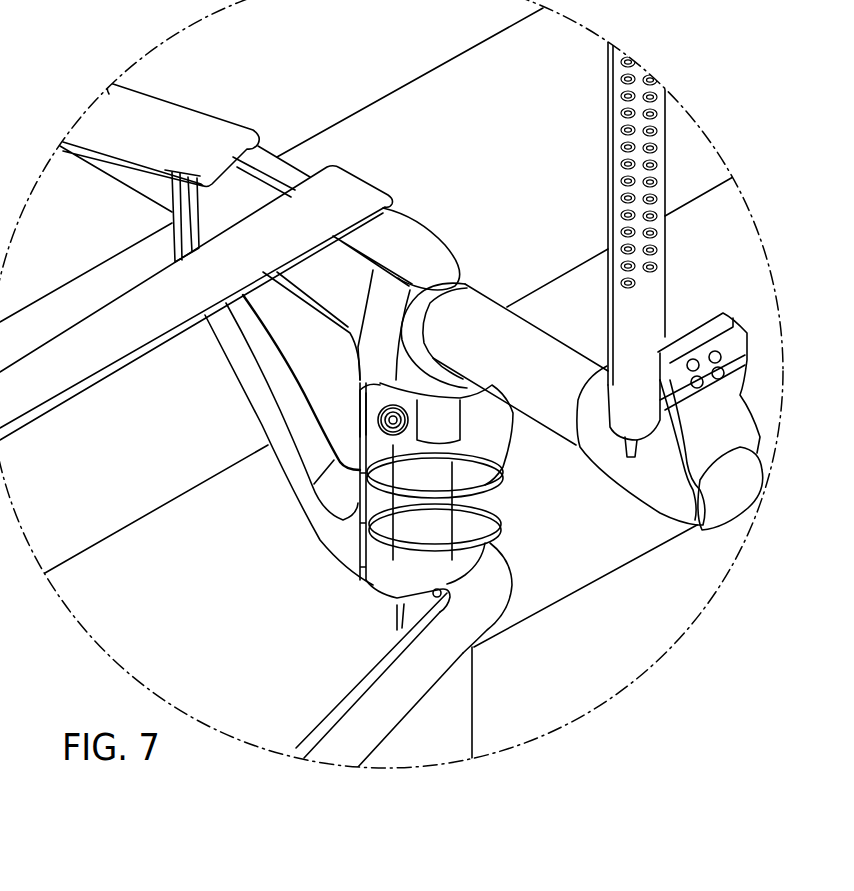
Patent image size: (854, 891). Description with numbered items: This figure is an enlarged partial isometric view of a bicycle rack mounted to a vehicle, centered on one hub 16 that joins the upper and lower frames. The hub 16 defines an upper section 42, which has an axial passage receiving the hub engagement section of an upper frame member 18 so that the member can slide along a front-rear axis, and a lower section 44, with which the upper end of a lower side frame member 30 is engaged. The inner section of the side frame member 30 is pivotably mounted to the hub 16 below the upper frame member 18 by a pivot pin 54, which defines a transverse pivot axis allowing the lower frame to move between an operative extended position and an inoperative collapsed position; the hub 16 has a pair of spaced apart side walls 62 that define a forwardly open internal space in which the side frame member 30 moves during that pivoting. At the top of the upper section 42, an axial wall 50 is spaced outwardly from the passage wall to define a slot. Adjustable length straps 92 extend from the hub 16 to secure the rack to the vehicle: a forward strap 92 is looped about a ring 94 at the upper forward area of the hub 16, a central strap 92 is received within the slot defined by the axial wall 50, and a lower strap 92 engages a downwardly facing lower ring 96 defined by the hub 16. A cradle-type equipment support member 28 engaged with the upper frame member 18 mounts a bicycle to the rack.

The hub 16 is at (255, 434).
The upper frame member 18 is at (768, 450).
The equipment support member 28 is at (622, 492).
The side frame member 30 is at (479, 733).
The upper section 42 is at (471, 262).
The lower section 44 is at (504, 484).
The axial wall 50 is at (402, 230).
The pivot pin 54 is at (380, 409).
The side wall 62 is at (255, 389).
The strap 92 is at (118, 288).
The ring 94 is at (263, 140).
The lower ring 96 is at (417, 608).